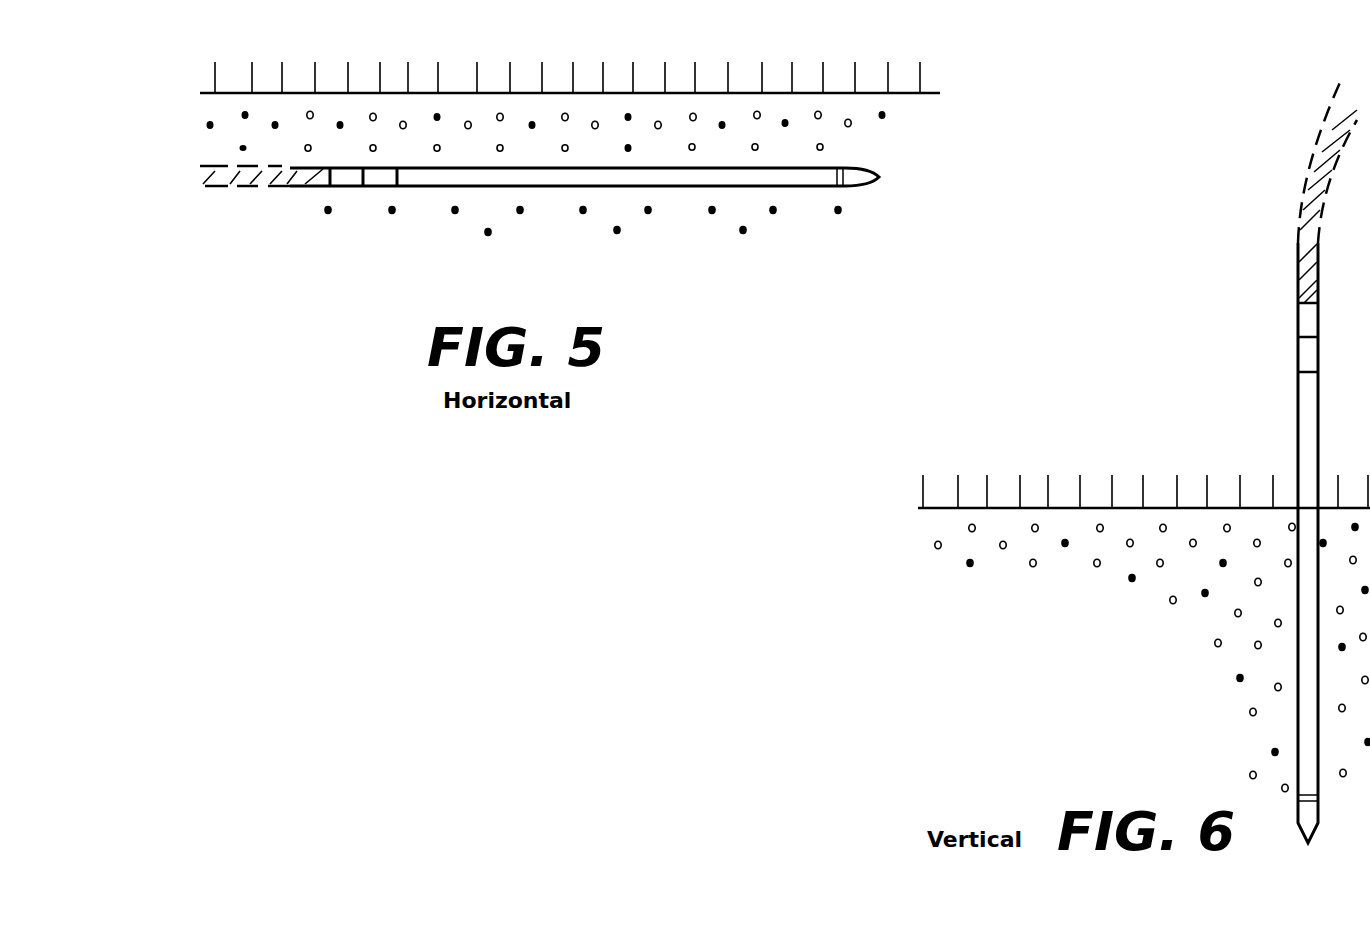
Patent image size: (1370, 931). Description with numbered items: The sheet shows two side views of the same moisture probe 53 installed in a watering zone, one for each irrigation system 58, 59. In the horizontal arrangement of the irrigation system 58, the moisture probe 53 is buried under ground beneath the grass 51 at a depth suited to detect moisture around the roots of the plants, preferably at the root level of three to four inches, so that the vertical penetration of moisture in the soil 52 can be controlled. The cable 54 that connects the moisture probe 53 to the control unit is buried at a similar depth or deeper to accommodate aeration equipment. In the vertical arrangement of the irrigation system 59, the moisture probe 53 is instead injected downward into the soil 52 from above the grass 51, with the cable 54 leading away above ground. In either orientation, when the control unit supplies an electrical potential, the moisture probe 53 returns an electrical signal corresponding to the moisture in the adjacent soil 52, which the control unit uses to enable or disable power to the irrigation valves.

In FIG. 5, the grass 51 is at (920, 75).
In FIG. 6, the grass 51 is at (1198, 500).
In FIG. 5, the soil 52 is at (922, 110).
In FIG. 6, the soil 52 is at (1175, 575).
In FIG. 5, the moisture probe 53 is at (900, 157).
In FIG. 6, the moisture probe 53 is at (1278, 723).
In FIG. 5, the cable 54 is at (228, 195).
In FIG. 6, the cable 54 is at (1327, 135).
In FIG. 5, the irrigation system 58 is at (217, 323).
In FIG. 6, the irrigation system 59 is at (912, 742).